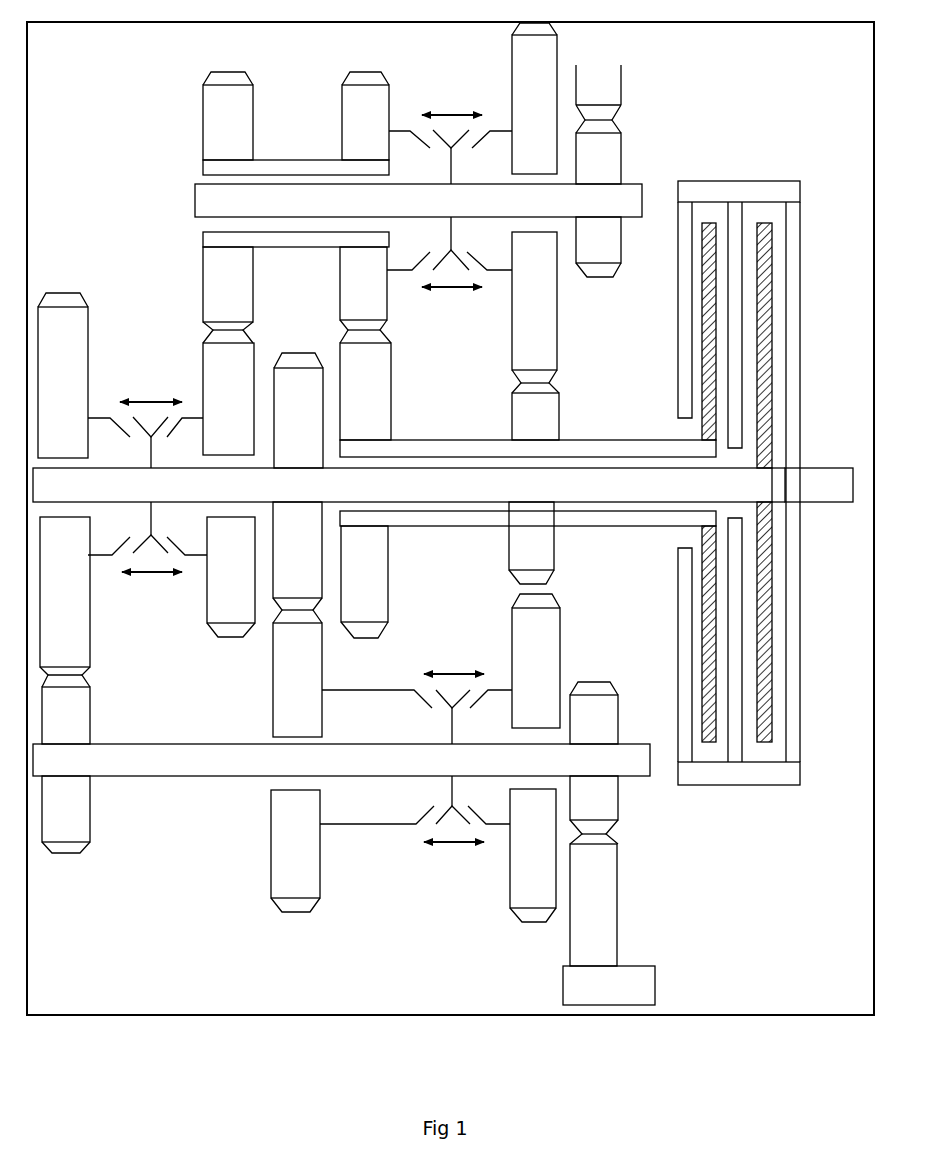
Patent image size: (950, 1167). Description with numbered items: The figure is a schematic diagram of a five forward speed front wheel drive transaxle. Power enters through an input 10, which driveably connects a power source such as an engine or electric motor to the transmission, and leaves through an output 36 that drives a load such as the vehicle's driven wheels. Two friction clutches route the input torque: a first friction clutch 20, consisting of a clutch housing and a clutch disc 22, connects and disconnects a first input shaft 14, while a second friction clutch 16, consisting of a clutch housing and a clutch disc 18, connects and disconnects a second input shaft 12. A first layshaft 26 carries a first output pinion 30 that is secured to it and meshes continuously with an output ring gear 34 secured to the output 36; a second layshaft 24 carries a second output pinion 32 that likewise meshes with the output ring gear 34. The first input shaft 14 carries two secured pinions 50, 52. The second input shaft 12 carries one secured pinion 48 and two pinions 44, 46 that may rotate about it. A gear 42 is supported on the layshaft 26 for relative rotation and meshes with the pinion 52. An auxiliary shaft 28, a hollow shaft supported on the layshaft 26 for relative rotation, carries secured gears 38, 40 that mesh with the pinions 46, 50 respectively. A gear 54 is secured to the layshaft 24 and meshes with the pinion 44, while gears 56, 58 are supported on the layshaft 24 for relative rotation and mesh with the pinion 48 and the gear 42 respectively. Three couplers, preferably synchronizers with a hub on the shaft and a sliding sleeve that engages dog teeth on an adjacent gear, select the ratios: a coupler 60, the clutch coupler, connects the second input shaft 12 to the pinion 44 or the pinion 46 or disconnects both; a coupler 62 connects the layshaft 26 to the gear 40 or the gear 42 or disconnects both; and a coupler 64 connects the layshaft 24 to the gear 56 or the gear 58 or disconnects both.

The input 10 is at (812, 485).
The second input shaft 12 is at (402, 485).
The first input shaft 14 is at (627, 445).
The second friction clutch 16 is at (761, 197).
The clutch disc 18 is at (763, 335).
The first friction clutch 20 is at (704, 193).
The clutch disc 22 is at (702, 353).
The second layshaft 24 is at (341, 760).
The first layshaft 26 is at (418, 135).
The auxiliary shaft 28 is at (298, 164).
The first output pinion 30 is at (598, 205).
The second output pinion 32 is at (594, 713).
The output ring gear 34 is at (595, 514).
The output 36 is at (609, 985).
The gear 38 is at (228, 295).
The gear 40 is at (365, 295).
The gear 42 is at (534, 408).
The pinion 44 is at (64, 490).
The pinion 46 is at (229, 490).
The pinion 48 is at (298, 488).
The pinion 50 is at (365, 490).
The pinion 52 is at (535, 416).
The gear 54 is at (66, 770).
The gear 56 is at (296, 767).
The gear 58 is at (535, 758).
The coupler 60 is at (152, 397).
The coupler 62 is at (452, 110).
The coupler 64 is at (456, 668).